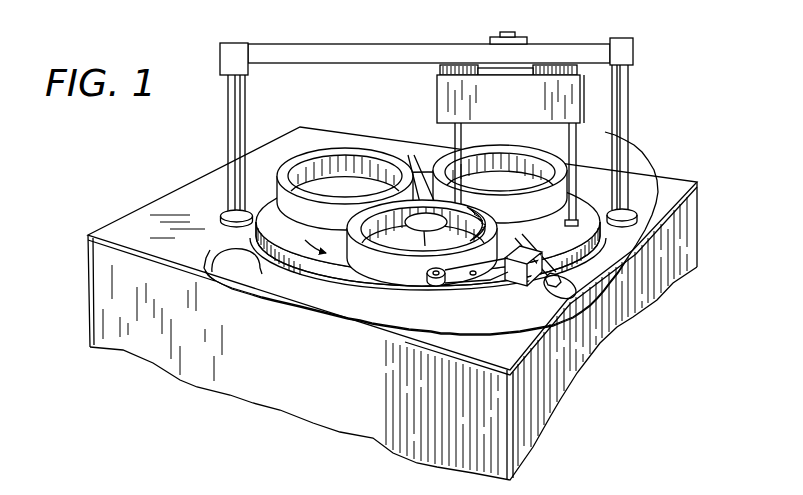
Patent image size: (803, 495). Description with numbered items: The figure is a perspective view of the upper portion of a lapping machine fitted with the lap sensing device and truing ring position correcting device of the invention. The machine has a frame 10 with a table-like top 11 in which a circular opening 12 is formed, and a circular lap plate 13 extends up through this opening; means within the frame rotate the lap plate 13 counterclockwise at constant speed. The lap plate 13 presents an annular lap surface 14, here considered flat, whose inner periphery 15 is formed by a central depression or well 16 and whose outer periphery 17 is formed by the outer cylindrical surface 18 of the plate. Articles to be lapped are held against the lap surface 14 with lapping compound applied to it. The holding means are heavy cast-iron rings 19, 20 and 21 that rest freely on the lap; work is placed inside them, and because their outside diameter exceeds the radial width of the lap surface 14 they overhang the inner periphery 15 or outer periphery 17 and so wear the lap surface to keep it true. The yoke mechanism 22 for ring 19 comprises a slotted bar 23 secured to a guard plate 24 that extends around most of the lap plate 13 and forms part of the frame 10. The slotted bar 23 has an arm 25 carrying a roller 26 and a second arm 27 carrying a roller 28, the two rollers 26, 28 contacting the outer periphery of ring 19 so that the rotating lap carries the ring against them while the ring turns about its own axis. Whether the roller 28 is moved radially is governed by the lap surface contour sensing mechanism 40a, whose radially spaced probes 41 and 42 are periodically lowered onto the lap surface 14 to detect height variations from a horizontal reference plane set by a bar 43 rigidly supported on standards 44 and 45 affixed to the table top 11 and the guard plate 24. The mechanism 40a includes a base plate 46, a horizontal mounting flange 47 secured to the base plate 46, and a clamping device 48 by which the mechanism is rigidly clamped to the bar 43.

The frame 10 is at (100, 290).
The table-like top 11 is at (172, 231).
The circular opening 12 is at (258, 230).
The lap plate 13 is at (256, 252).
The lap surface 14 is at (330, 266).
The inner periphery 15 is at (410, 157).
The central depression or well 16 is at (421, 254).
The outer periphery 17 is at (283, 255).
The outer cylindrical surface 18 is at (226, 276).
The ring 19 is at (383, 267).
The ring 20 is at (263, 200).
The ring 21 is at (546, 198).
The yoke mechanism 22 is at (585, 248).
The slotted bar 23 is at (612, 282).
The guard plate 24 is at (533, 317).
The arm 25 is at (505, 220).
The roller 26 is at (503, 222).
The second arm 27 is at (455, 300).
The roller 28 is at (472, 287).
The lap surface contour sensing mechanism 40a is at (587, 90).
The probe 41 is at (450, 142).
The probe 42 is at (578, 145).
The bar 43 is at (363, 33).
The standard 44 is at (230, 125).
The standard 45 is at (628, 90).
The base plate 46 is at (530, 108).
The mounting flange 47 is at (540, 67).
The clamping device 48 is at (515, 32).